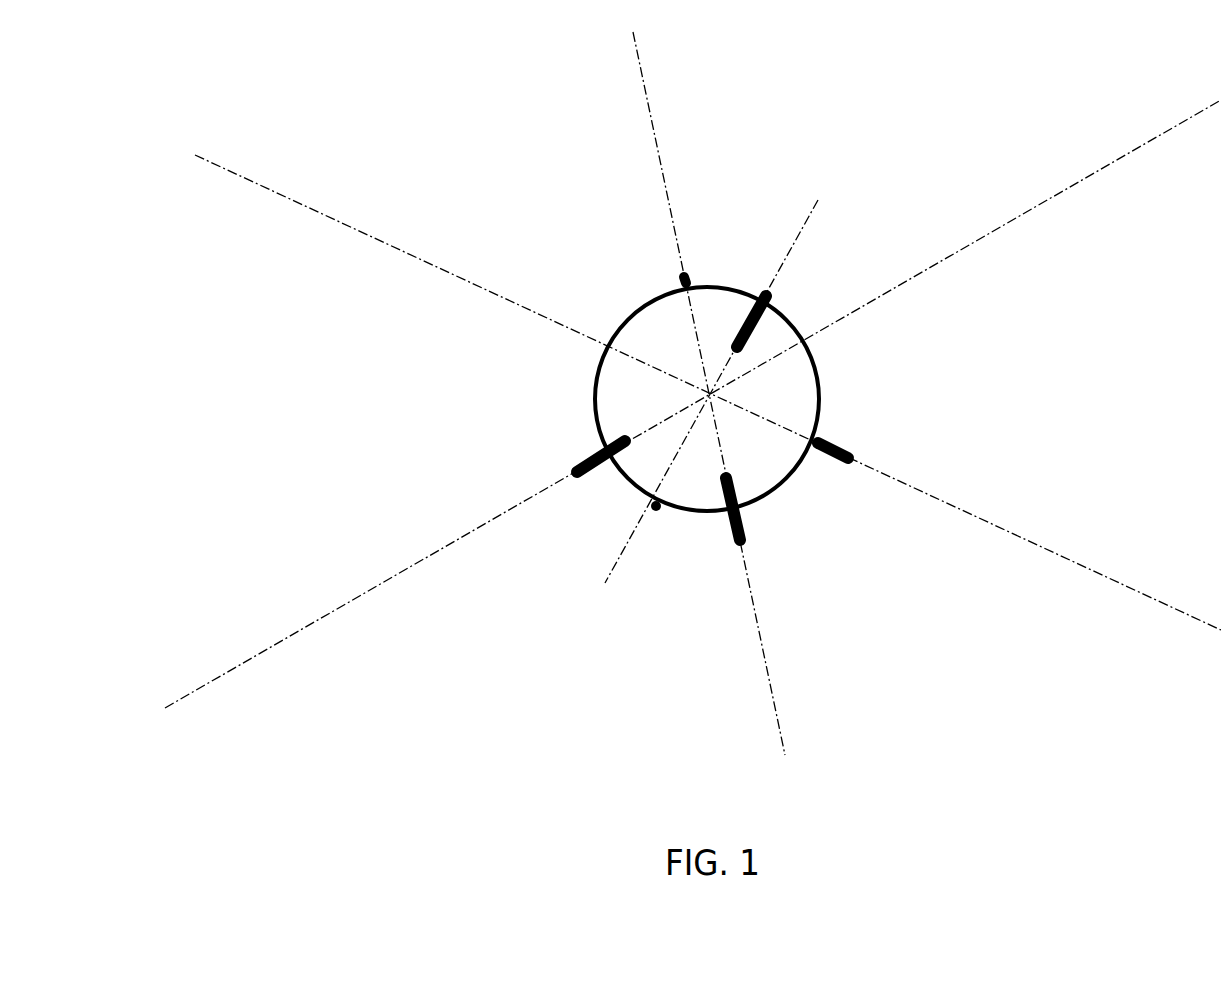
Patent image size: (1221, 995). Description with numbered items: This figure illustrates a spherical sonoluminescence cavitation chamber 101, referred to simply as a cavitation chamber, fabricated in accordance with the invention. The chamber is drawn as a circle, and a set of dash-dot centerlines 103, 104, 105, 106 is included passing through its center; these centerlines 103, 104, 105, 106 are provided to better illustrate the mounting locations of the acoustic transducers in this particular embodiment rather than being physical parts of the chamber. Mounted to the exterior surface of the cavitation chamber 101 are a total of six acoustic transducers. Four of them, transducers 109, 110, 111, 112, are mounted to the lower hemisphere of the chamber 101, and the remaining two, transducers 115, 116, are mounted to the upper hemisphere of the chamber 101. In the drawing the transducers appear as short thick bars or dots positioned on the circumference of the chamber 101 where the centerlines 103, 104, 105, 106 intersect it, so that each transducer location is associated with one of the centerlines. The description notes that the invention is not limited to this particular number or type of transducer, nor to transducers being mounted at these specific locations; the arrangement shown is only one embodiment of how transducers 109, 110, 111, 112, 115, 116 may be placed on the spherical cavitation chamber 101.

The spherical sonoluminescence cavitation chamber 101 is at (572, 418).
The centerline 103 is at (442, 548).
The centerline 104 is at (622, 551).
The centerline 105 is at (780, 728).
The centerline 106 is at (1138, 593).
The acoustic transducer 109 is at (585, 464).
The acoustic transducer 110 is at (660, 507).
The acoustic transducer 111 is at (742, 513).
The acoustic transducer 112 is at (833, 441).
The acoustic transducer 115 is at (683, 272).
The acoustic transducer 116 is at (770, 287).